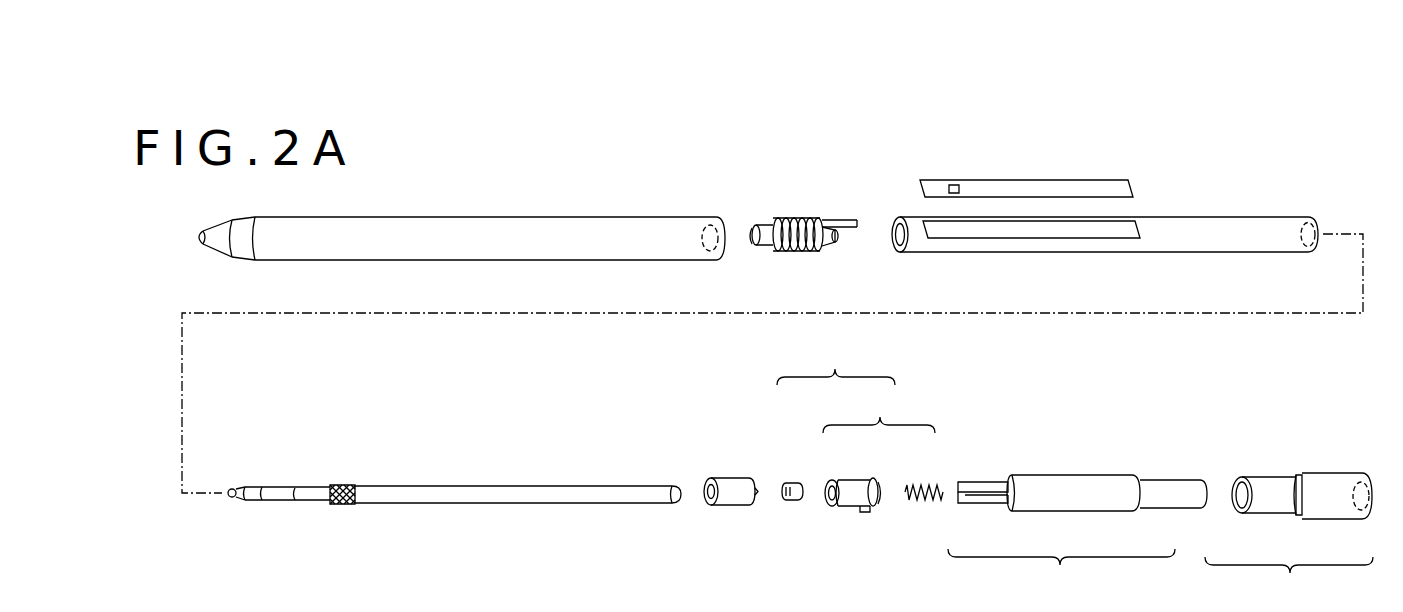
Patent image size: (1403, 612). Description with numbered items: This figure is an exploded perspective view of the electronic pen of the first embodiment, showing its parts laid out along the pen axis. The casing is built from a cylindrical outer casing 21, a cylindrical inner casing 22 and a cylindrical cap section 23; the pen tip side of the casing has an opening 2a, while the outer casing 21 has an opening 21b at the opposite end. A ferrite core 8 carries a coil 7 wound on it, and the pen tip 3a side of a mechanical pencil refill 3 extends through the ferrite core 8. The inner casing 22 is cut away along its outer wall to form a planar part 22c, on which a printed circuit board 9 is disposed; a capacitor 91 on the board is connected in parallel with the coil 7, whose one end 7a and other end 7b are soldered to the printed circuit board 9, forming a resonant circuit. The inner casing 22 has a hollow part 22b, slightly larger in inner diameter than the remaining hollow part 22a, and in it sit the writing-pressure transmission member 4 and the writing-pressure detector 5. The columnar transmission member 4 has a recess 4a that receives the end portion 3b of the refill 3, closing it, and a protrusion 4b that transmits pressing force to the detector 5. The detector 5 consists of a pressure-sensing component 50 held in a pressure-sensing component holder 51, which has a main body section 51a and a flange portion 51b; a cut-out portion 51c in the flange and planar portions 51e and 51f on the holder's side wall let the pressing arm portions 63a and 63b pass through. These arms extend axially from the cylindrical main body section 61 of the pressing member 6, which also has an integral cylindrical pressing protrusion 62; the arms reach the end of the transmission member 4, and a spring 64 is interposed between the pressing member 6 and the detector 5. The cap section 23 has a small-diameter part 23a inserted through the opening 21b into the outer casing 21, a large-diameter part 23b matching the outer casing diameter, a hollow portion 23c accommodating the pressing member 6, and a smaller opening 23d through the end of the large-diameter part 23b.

The opening 2a is at (197, 237).
The outer casing 21 is at (551, 214).
The opening 21b is at (718, 226).
The coil 7 is at (792, 217).
The one end of the coil 7a is at (838, 219).
The other end of the coil 7b is at (840, 233).
The ferrite core 8 is at (755, 246).
The printed circuit board 9 is at (1083, 178).
The capacitor 91 is at (953, 183).
The inner casing 22 is at (1207, 226).
The hollow part 22a is at (898, 252).
The hollow part 22b is at (1316, 227).
The planar part 22c is at (1022, 229).
The mechanical pencil refill 3 is at (470, 504).
The pen tip 3a is at (232, 498).
The end portion 3b is at (672, 504).
The writing-pressure transmission member 4 is at (737, 506).
The recess 4a is at (706, 482).
The protrusion 4b is at (757, 489).
The writing-pressure detector 5 is at (836, 363).
The pressure-sensing component 50 is at (788, 483).
The pressure-sensing component holder 51 is at (879, 446).
The main body section 51a is at (850, 479).
The flange portion 51b is at (877, 480).
The cut-out portion 51c is at (882, 497).
The planar portion 51e is at (858, 509).
The planar portion 51f is at (827, 498).
The spring 64 is at (914, 501).
The pressing member 6 is at (1061, 571).
The main body section 61 is at (1065, 512).
The pressing protrusion 62 is at (1160, 509).
The pressing arm portion 63a is at (998, 504).
The pressing arm portion 63b is at (961, 505).
The cap section 23 is at (1289, 580).
The small-diameter part 23a is at (1280, 514).
The large-diameter part 23b is at (1348, 520).
The hollow portion 23c is at (1243, 514).
The opening 23d is at (1366, 488).